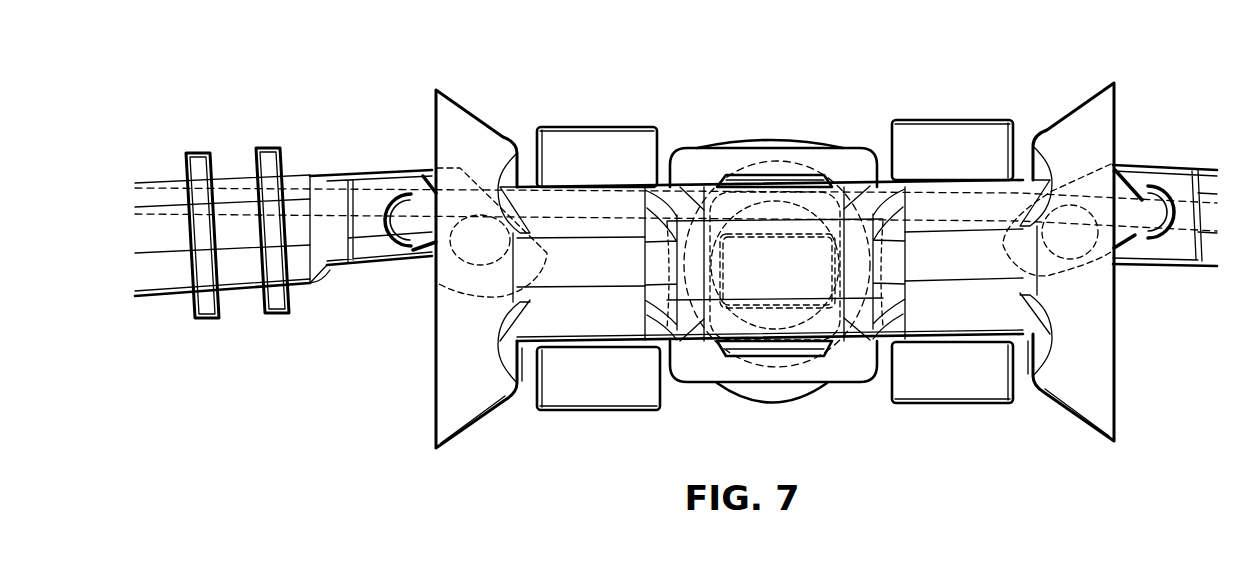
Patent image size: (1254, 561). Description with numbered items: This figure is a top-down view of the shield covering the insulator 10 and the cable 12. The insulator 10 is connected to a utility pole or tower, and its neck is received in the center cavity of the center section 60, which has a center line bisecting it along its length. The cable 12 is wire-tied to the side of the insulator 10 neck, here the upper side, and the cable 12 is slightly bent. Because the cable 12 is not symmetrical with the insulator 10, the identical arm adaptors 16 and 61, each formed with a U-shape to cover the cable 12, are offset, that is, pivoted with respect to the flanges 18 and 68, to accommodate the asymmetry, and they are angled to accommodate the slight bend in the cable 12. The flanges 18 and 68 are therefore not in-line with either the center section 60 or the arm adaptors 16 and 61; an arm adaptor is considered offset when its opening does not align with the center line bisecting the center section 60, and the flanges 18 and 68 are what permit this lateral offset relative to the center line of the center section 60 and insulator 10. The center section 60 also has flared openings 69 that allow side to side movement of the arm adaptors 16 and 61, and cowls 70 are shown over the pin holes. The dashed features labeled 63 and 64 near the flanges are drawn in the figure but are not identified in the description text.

The insulator 10 is at (773, 142).
The cable 12 is at (610, 187).
The arm adaptor 16 is at (375, 176).
The flange 18 is at (468, 190).
The center section 60 is at (913, 74).
The arm adaptor 61 is at (1163, 167).
The first opening 63 is at (505, 263).
The second opening 64 is at (1047, 260).
The flange 68 is at (1097, 170).
The flared openings 69 is at (1083, 103).
The cowls 70 is at (580, 138).